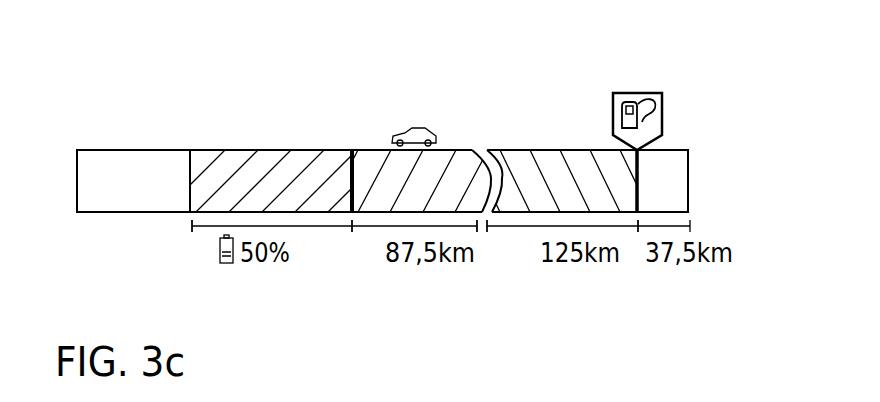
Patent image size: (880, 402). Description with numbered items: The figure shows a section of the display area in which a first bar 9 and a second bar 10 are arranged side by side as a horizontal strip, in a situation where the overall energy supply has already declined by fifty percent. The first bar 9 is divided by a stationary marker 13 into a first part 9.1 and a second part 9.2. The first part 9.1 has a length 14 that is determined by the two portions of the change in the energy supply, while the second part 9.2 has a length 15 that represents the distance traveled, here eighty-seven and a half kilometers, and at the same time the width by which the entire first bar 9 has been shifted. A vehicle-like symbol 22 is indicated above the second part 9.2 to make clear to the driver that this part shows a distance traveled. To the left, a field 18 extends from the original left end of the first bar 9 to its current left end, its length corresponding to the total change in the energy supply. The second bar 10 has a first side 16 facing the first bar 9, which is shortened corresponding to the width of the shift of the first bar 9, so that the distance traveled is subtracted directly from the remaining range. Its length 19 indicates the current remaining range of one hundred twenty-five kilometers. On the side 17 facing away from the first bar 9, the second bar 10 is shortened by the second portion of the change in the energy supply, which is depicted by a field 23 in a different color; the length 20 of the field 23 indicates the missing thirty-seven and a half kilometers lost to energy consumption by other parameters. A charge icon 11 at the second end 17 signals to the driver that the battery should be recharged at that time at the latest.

The field 18 is at (93, 162).
The first part of first bar 9.1 is at (227, 163).
The first bar 9 is at (297, 126).
The marker 13 is at (355, 150).
The symbol 22 is at (407, 135).
The second part of first bar 9.2 is at (458, 160).
The first side of second bar 16 is at (495, 165).
The second bar 10 is at (583, 126).
The charge icon 11 is at (642, 92).
The second end of second bar 17 is at (638, 176).
The field 23 is at (682, 193).
The length of first part of first bar 14 is at (201, 226).
The length of second part of first bar 15 is at (370, 226).
The length of second bar 19 is at (515, 226).
The length of field 20 is at (643, 226).